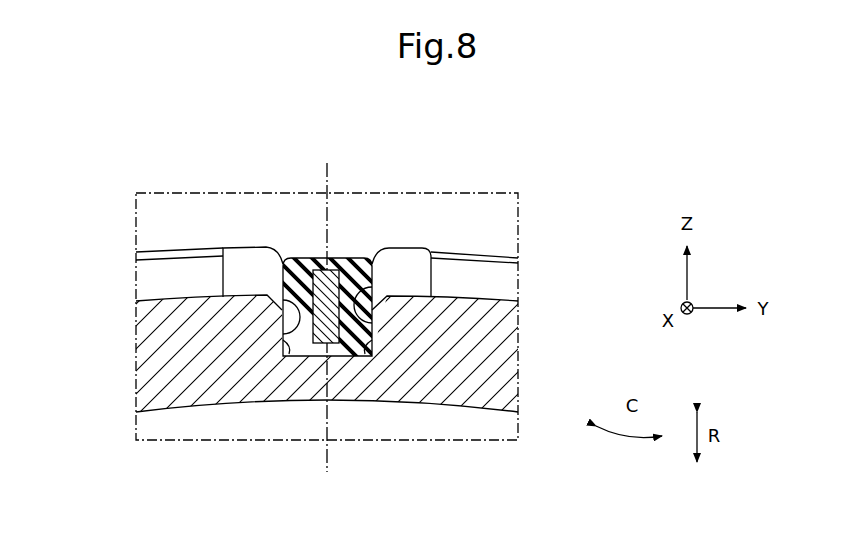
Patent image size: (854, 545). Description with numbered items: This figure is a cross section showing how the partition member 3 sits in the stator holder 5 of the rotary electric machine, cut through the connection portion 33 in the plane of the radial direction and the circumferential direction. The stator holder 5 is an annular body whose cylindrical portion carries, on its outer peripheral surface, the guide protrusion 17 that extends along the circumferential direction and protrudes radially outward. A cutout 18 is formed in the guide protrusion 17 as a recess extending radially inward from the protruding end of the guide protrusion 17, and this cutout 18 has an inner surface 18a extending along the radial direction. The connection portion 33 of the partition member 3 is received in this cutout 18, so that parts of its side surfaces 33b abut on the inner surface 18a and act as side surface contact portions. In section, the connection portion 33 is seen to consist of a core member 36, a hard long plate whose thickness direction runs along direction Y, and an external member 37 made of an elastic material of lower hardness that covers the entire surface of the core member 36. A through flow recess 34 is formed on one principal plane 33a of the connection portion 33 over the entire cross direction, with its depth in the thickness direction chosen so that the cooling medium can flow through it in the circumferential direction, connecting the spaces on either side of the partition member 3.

The partition member 3 is at (286, 262).
The stator holder 5 is at (128, 375).
The guide protrusion 17 is at (499, 325).
The cutout 18 is at (222, 288).
The inner surface 18a is at (432, 287).
The connection portion 33 is at (306, 258).
The principal plane 33a is at (319, 357).
The side surfaces 33b is at (283, 328).
The through flow recess 34 is at (348, 259).
The core member 36 is at (355, 358).
The external member 37 is at (300, 358).